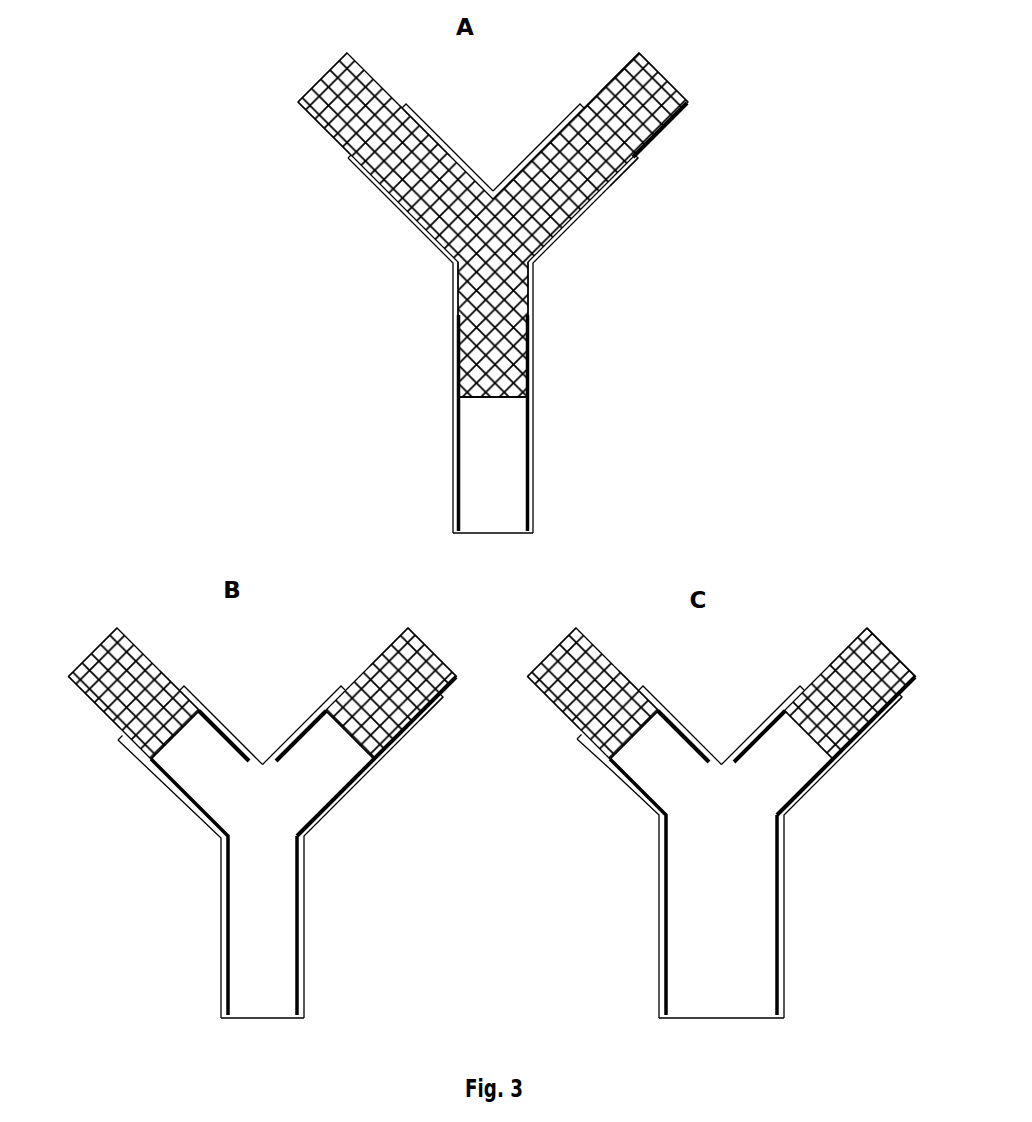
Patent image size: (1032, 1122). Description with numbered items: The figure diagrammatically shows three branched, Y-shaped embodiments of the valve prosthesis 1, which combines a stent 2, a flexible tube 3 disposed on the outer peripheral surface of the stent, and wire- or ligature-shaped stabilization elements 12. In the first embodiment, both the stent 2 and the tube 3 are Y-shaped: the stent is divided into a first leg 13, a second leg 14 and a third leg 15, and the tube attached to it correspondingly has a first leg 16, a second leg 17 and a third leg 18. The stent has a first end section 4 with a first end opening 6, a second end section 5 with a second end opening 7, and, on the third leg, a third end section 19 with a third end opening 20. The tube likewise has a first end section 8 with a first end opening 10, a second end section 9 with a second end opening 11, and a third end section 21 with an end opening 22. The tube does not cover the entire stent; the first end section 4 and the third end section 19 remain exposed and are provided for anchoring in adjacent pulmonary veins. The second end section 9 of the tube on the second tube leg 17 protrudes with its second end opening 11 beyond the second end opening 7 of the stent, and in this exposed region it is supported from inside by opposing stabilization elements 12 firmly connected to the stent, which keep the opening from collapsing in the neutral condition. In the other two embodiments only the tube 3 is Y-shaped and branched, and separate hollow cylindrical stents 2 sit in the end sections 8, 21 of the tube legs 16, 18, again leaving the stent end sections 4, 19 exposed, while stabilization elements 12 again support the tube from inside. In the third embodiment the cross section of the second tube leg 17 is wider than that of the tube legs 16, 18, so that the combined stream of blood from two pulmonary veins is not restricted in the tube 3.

The valve prosthesis 1 is at (210, 151).
The stent 2 is at (363, 113).
The flexible tube 3 is at (440, 290).
The first end section of the stent 4 is at (322, 124).
The second end section of the stent 5 is at (453, 333).
The first end opening of the stent 6 is at (297, 80).
The second end opening of the stent 7 is at (492, 396).
The first end section of the tube 8 is at (370, 193).
The second end section of the tube 9 is at (440, 460).
The first end opening of the tube 10 is at (342, 157).
The second end opening of the tube 11 is at (492, 533).
The wire- or ligature-shaped stabilization elements 12 is at (530, 452).
The first leg of the stent 13 is at (346, 54).
The second leg of the stent 14 is at (500, 320).
The third leg of the stent 15 is at (663, 128).
The first leg of the tube 16 is at (425, 137).
The second leg of the tube 17 is at (528, 481).
The third leg of the tube 18 is at (520, 153).
The third end section of the stent 19 is at (603, 90).
The third end opening of the stent 20 is at (660, 73).
The third end section of the tube 21 is at (549, 125).
The end opening of the third tube end section 22 is at (627, 156).